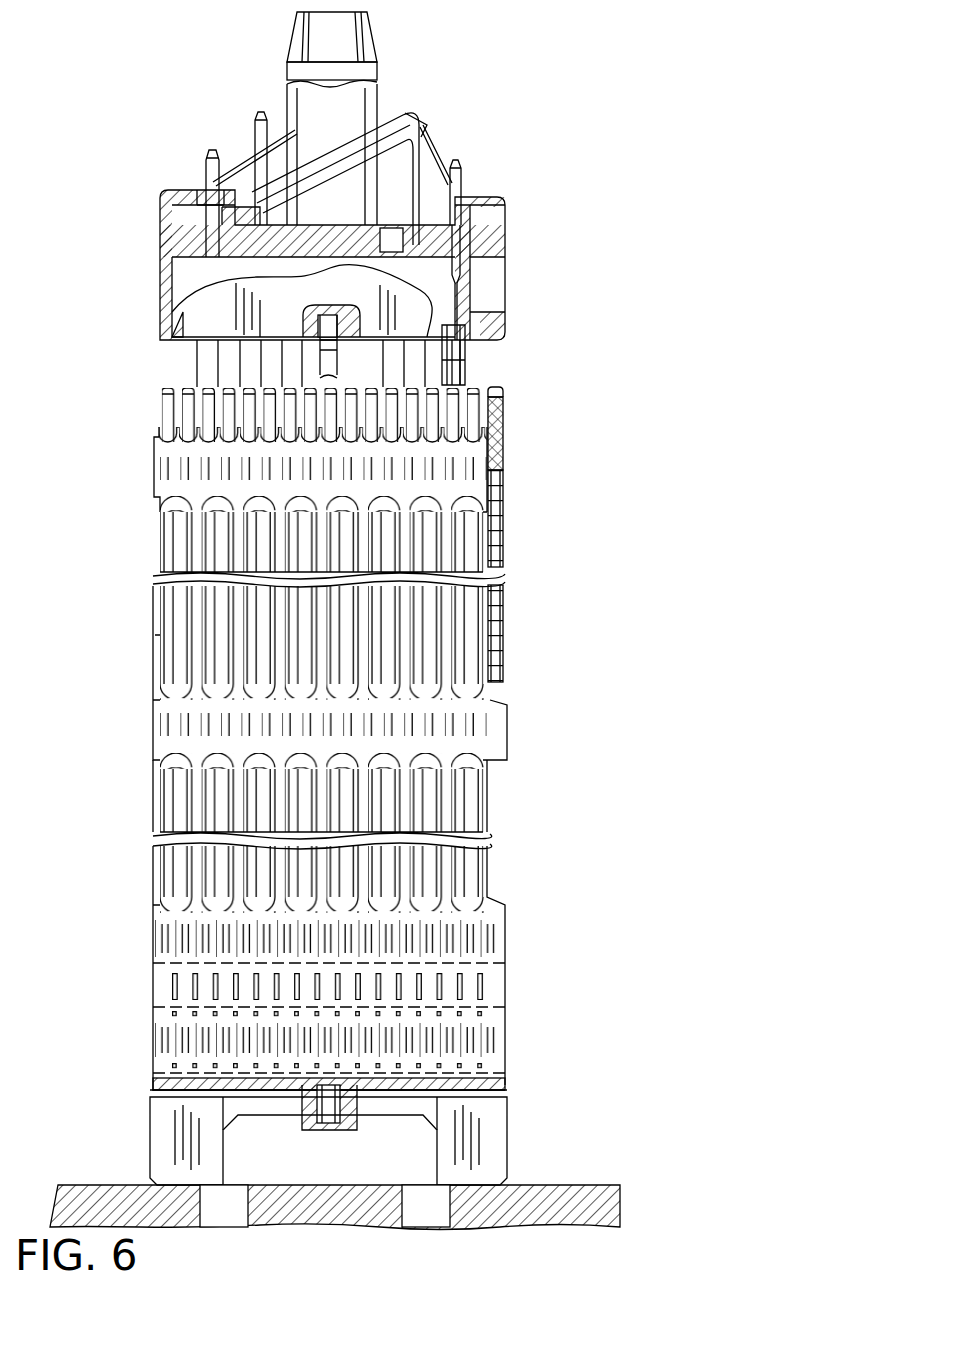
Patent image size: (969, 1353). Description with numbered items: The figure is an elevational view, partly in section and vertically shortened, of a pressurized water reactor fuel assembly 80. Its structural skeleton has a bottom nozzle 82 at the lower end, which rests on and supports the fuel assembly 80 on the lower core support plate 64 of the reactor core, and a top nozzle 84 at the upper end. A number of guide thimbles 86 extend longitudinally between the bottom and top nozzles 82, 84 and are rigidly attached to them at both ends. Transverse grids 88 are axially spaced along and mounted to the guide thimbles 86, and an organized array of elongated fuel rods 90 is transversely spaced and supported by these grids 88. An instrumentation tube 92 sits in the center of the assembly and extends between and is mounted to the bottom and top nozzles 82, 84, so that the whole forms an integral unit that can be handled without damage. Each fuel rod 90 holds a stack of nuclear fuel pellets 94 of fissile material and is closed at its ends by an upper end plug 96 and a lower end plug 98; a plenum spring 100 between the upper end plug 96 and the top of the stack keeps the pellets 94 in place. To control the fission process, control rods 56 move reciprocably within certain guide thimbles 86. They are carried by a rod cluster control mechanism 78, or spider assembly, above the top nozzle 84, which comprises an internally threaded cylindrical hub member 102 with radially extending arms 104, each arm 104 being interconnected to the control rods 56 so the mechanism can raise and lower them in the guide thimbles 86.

The control rods 56 is at (480, 303).
The lower core support plate 64 is at (530, 1188).
The rod cluster control mechanism 78 is at (424, 111).
The fuel assembly 80 is at (587, 258).
The bottom nozzle 82 is at (513, 1133).
The top nozzle 84 is at (509, 244).
The guide thimbles 86 is at (480, 378).
The transverse grids 88 is at (155, 482).
The fuel rods 90 is at (155, 640).
The instrumentation tube 92 is at (338, 1100).
The nuclear fuel pellets 94 is at (500, 545).
The upper end plug 96 is at (505, 393).
The lower end plug 98 is at (505, 1083).
The plenum spring 100 is at (503, 455).
The cylindrical hub member 102 is at (380, 100).
The arms 104 is at (244, 162).